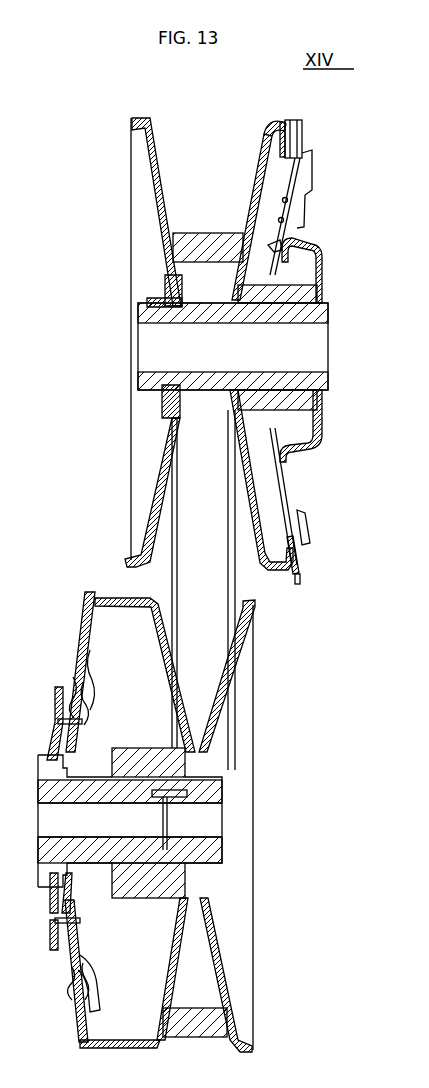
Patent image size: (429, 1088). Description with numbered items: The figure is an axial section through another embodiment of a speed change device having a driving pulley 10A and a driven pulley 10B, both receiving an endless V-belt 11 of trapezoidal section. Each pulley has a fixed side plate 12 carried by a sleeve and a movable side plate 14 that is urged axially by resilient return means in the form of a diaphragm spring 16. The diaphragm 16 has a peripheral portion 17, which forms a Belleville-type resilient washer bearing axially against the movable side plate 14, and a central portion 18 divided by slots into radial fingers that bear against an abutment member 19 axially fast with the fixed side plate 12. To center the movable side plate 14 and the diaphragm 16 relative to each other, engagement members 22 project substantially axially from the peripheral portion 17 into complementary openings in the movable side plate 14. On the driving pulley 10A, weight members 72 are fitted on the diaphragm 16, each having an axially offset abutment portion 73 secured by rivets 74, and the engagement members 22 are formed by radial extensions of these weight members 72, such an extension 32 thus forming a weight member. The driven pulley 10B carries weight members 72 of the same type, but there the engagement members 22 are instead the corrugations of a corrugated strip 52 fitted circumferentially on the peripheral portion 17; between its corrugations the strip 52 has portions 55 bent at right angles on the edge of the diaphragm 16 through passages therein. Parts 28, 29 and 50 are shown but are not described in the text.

The driving pulley 10A is at (245, 1052).
The driven pulley 10B is at (174, 130).
The endless V-belt 11 is at (208, 247).
The fixed side plate 12 is at (170, 195).
The movable side plate 14 is at (258, 165).
The diaphragm spring 16 is at (296, 520).
The peripheral portion 17 is at (299, 578).
The central portion 18 is at (265, 440).
The abutment member 19 is at (322, 268).
The engagement members 22 is at (280, 150).
The flange 28 is at (283, 128).
The flange 29 is at (108, 608).
The extension 32 is at (320, 150).
The rivets 50 is at (300, 210).
The corrugated strip 52 is at (285, 160).
The bent portions 55 is at (290, 535).
The weight members 72 is at (90, 650).
The abutment portion 73 is at (83, 683).
The rivets 74 is at (73, 677).